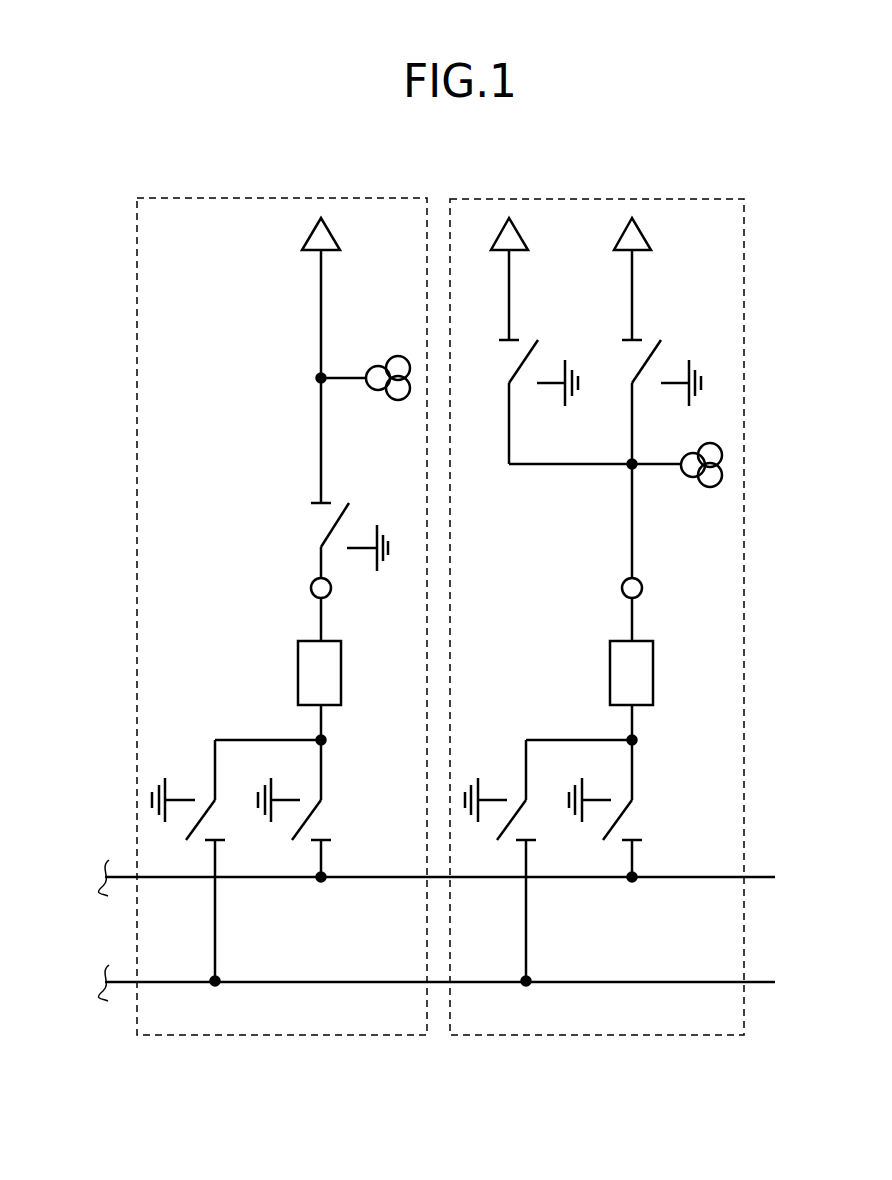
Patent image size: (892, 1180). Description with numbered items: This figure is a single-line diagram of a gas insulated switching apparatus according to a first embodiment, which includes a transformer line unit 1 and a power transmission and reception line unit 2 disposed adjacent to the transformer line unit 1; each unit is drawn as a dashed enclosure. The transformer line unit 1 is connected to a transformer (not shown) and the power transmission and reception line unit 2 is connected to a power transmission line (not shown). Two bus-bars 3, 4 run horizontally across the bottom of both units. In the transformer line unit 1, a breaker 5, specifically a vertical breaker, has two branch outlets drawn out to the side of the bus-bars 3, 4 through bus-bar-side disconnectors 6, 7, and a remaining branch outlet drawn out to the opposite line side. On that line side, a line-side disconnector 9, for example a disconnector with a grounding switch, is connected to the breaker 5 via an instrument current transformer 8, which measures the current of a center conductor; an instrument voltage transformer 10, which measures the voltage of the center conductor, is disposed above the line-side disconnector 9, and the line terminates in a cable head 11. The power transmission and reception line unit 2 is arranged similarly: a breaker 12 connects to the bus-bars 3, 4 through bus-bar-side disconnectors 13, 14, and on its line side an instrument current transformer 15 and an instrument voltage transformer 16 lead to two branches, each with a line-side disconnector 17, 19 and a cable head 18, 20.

The transformer line unit 1 is at (371, 199).
The power transmission and reception line unit 2 is at (680, 199).
The bus-bar 3 is at (777, 1003).
The bus-bar 4 is at (777, 898).
The breaker 5 is at (342, 672).
The bus-bar-side disconnector 6 is at (230, 831).
The bus-bar-side disconnector 7 is at (335, 831).
The instrument current transformer 8 is at (332, 588).
The line-side disconnector 9 is at (312, 528).
The instrument voltage transformer 10 is at (393, 346).
The cable head 11 is at (342, 240).
The breaker 12 is at (654, 672).
The bus-bar-side disconnector 13 is at (542, 831).
The bus-bar-side disconnector 14 is at (647, 831).
The instrument current transformer 15 is at (643, 588).
The instrument voltage transformer 16 is at (692, 493).
The line-side disconnector 17 is at (653, 326).
The cable head 18 is at (652, 240).
The line-side disconnector 19 is at (530, 326).
The cable head 20 is at (529, 240).